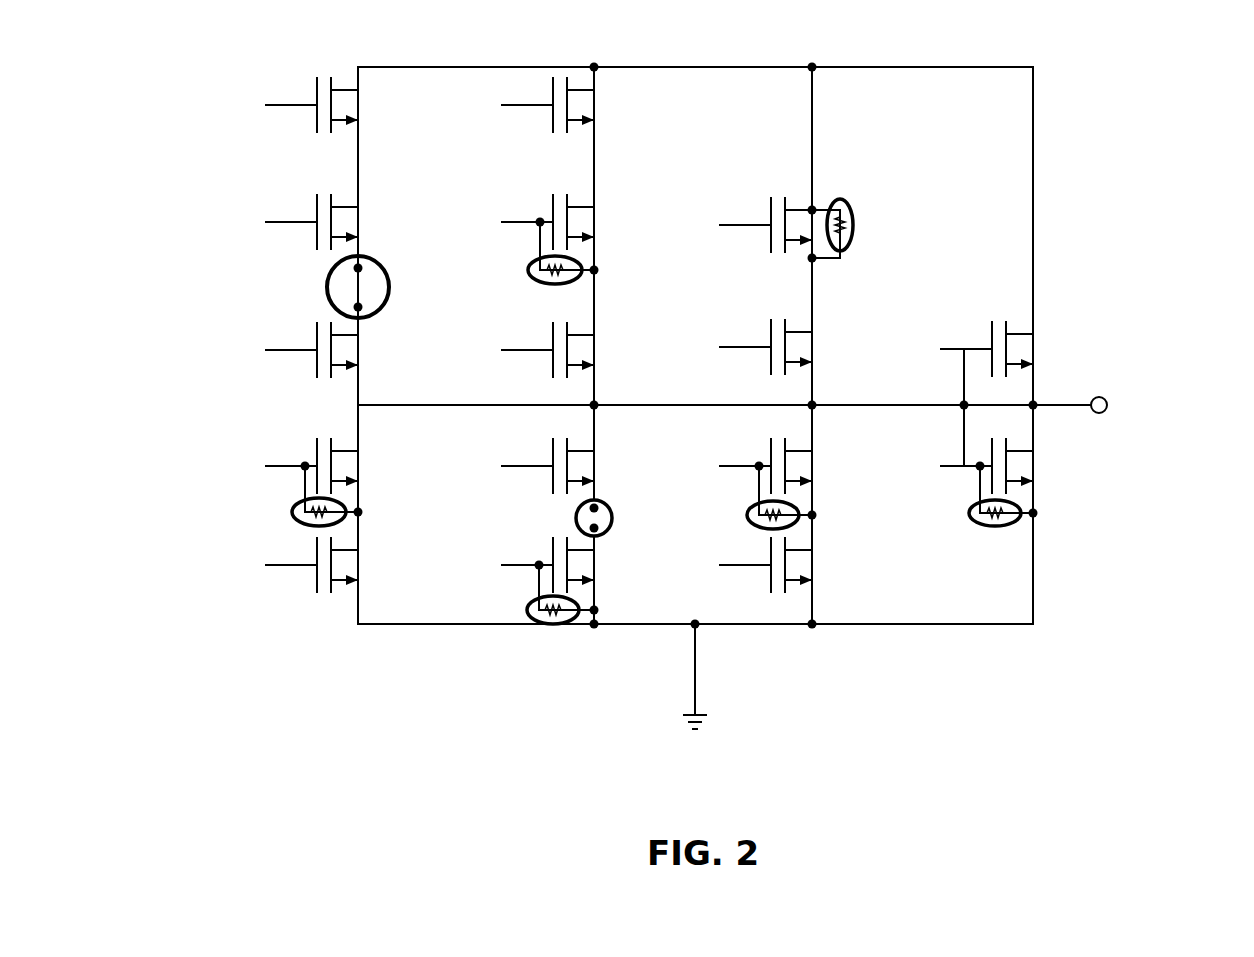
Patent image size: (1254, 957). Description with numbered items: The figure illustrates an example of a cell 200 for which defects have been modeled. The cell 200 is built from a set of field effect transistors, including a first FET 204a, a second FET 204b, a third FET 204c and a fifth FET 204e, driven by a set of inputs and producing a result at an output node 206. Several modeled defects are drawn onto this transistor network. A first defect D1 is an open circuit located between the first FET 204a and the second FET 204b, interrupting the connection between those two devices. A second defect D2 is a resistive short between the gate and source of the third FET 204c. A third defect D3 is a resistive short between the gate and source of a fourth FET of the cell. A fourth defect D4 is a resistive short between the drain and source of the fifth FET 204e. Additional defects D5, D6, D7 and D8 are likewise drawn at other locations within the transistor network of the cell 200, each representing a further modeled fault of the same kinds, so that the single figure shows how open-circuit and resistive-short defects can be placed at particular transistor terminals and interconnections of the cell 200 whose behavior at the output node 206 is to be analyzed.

The logic circuit 200 is at (717, 392).
The first field effect transistor 204a is at (327, 195).
The second field effect transistor 204b is at (325, 383).
The third field effect transistor 204c is at (588, 220).
The fifth field effect transistor 204e is at (810, 463).
The output node 206 is at (1099, 413).
The first defect D1 is at (328, 282).
The second defect D2 is at (540, 283).
The third defect D3 is at (856, 218).
The fourth defect D4 is at (743, 523).
The diode/fuse element D5 is at (292, 517).
The diode/fuse element D6 is at (528, 608).
The diode/fuse element D7 is at (597, 503).
The diode/fuse element D8 is at (985, 528).